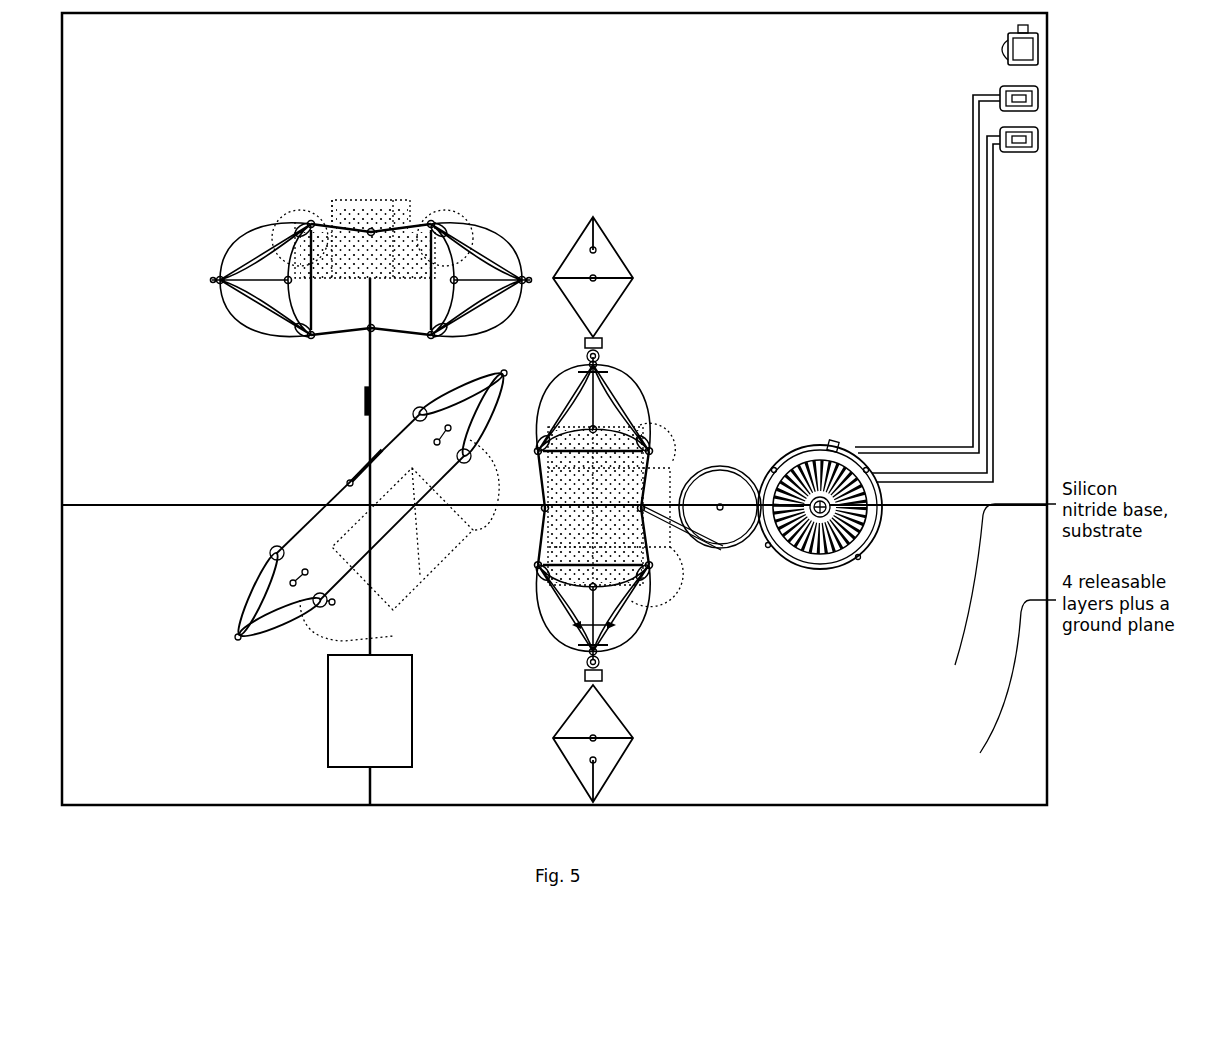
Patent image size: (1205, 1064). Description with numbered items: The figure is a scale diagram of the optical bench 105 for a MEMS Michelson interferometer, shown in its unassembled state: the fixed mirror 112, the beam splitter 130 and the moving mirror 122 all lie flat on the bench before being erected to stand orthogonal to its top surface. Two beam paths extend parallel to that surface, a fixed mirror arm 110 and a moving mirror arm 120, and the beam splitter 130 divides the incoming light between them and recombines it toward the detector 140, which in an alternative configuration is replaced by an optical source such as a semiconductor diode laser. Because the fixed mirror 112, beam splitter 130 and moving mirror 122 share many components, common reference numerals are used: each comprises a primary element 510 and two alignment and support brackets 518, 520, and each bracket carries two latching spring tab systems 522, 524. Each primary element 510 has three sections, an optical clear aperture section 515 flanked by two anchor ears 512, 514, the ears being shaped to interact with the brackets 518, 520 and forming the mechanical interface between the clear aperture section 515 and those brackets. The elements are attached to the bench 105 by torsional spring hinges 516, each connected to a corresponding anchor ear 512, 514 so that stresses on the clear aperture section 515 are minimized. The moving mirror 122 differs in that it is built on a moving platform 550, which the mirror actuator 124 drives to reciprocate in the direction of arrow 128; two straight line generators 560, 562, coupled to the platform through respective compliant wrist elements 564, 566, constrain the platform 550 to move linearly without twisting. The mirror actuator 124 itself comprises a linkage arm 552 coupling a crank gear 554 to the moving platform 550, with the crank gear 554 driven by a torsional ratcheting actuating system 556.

The optical bench 105 is at (693, 768).
The fixed mirror arm 110 is at (366, 400).
The fixed mirror 112 is at (262, 212).
The moving mirror arm 120 is at (515, 500).
The moving mirror 122 is at (514, 610).
The mirror actuator 124 is at (750, 432).
The arrow 128 is at (586, 645).
The beam splitter 130 is at (248, 540).
The detector 140 is at (328, 705).
The primary element 510 is at (318, 195).
The anchor ear 512 is at (296, 193).
The anchor ear 514 is at (473, 207).
The optical clear aperture section 515 is at (333, 200).
The torsional spring hinge 516 is at (386, 212).
The alignment and support bracket 518 is at (237, 290).
The alignment and support bracket 520 is at (498, 245).
The latching spring tab system 522 is at (341, 333).
The latching spring tab system 524 is at (308, 330).
The moving platform 550 is at (632, 603).
The linkage arm 552 is at (700, 547).
The crank gear 554 is at (725, 550).
The torsional ratcheting actuating system 556 is at (845, 567).
The straight line generator 560 is at (634, 738).
The straight line generator 562 is at (605, 232).
The compliant wrist element 564 is at (604, 677).
The compliant wrist element 566 is at (598, 335).